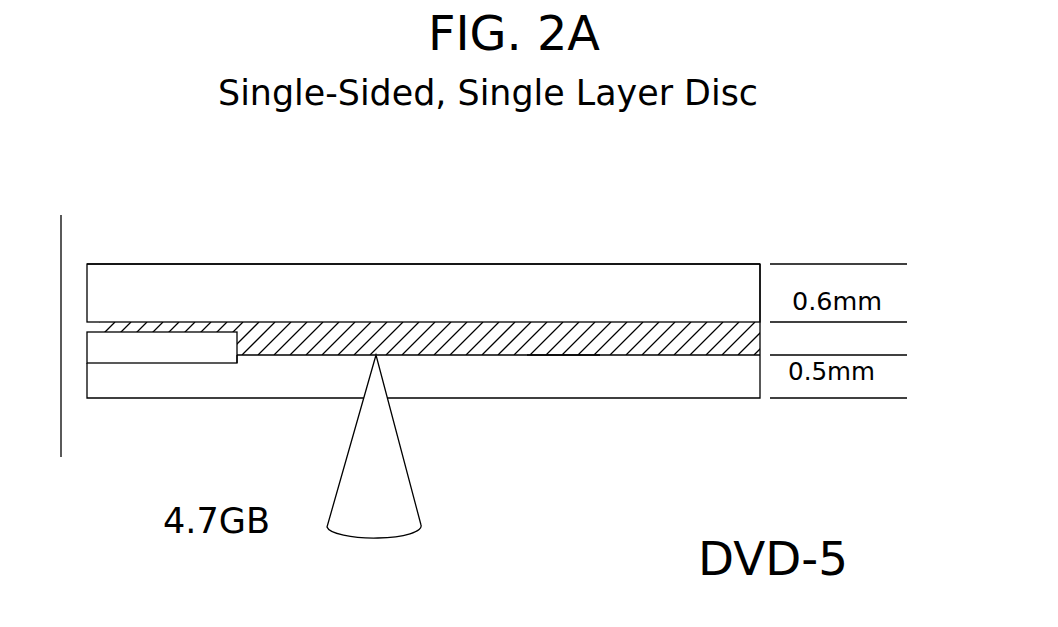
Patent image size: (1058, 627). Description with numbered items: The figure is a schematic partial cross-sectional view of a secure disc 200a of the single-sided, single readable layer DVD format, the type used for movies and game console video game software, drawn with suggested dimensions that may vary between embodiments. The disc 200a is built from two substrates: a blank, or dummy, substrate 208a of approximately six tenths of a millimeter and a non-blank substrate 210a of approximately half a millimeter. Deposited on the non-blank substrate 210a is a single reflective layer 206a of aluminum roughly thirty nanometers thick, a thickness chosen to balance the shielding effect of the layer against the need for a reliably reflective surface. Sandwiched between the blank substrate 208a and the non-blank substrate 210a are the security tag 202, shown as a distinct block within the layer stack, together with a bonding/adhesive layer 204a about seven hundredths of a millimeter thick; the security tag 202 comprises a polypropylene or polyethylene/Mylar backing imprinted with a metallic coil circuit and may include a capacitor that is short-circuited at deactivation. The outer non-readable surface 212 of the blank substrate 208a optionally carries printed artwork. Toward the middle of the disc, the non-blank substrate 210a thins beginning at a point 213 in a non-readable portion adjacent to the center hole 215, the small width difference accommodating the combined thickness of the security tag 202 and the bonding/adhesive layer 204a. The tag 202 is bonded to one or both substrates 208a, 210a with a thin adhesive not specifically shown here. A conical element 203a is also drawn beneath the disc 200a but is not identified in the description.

The secure disc 200a is at (432, 372).
The security tag 202 is at (210, 340).
The laser beam 203a is at (415, 501).
The bonding/adhesive layer 204a is at (587, 345).
The reflective layer 206a is at (527, 355).
The blank substrate 208a is at (131, 294).
The non-blank substrate 210a is at (705, 383).
The outer non-readable surface 212 is at (390, 264).
The point 213 is at (226, 370).
The center hole 215 is at (71, 388).